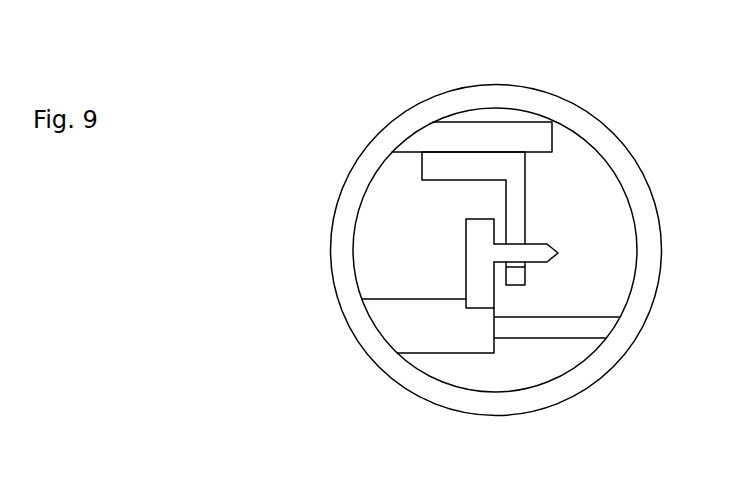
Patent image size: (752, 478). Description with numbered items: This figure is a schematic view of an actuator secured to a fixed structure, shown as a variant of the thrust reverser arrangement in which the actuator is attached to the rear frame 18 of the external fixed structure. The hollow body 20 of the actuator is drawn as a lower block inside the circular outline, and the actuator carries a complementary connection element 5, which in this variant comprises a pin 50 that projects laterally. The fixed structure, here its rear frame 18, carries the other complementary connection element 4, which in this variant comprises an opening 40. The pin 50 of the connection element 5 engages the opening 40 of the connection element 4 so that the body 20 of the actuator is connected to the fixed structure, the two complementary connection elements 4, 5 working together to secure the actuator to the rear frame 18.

The complementary connection element 4 is at (418, 175).
The complementary connection element 5 is at (459, 255).
The rear frame 18 is at (508, 122).
The body 20 is at (458, 355).
The opening 40 is at (515, 241).
The pin 50 is at (548, 253).